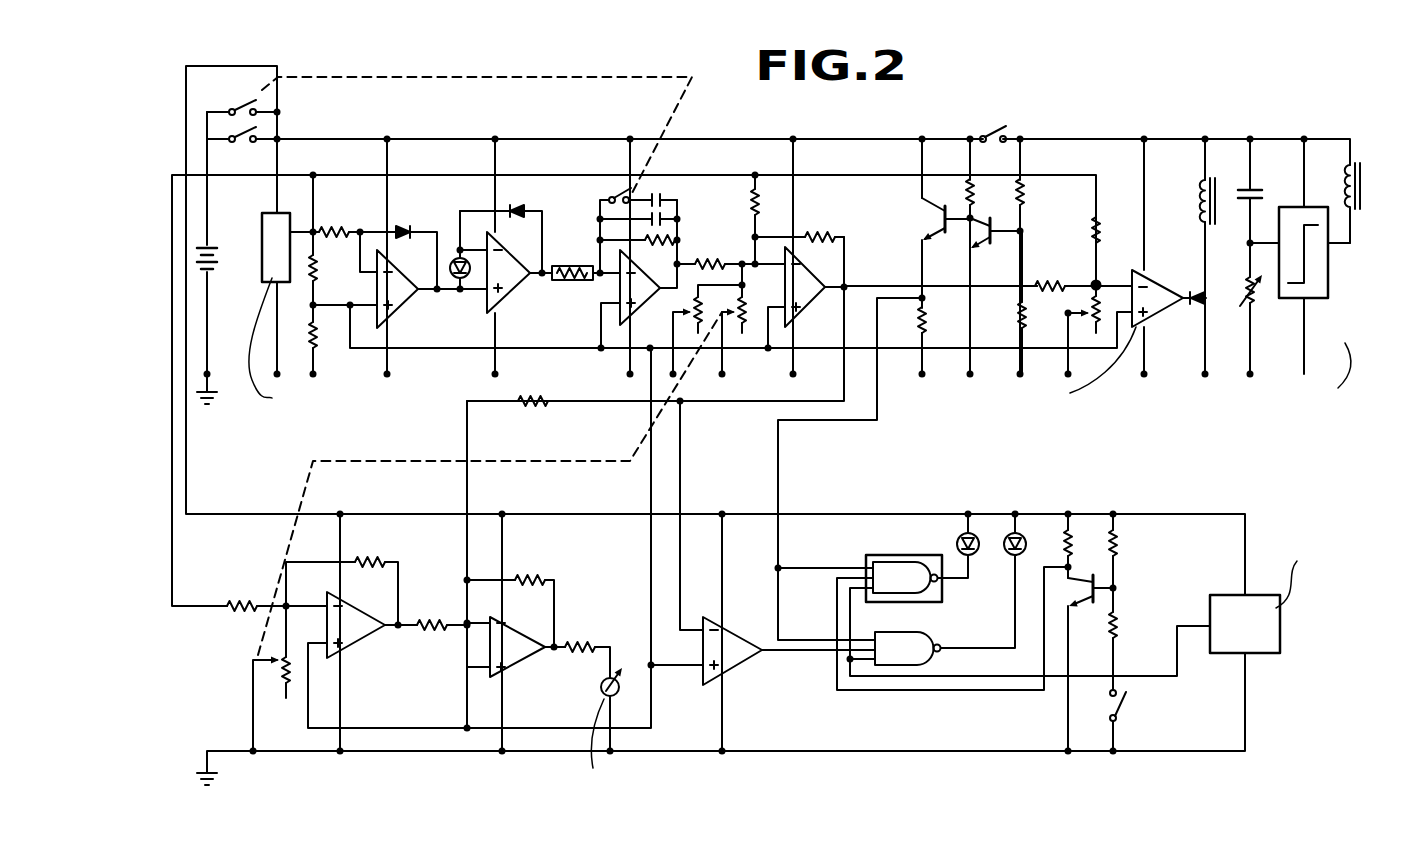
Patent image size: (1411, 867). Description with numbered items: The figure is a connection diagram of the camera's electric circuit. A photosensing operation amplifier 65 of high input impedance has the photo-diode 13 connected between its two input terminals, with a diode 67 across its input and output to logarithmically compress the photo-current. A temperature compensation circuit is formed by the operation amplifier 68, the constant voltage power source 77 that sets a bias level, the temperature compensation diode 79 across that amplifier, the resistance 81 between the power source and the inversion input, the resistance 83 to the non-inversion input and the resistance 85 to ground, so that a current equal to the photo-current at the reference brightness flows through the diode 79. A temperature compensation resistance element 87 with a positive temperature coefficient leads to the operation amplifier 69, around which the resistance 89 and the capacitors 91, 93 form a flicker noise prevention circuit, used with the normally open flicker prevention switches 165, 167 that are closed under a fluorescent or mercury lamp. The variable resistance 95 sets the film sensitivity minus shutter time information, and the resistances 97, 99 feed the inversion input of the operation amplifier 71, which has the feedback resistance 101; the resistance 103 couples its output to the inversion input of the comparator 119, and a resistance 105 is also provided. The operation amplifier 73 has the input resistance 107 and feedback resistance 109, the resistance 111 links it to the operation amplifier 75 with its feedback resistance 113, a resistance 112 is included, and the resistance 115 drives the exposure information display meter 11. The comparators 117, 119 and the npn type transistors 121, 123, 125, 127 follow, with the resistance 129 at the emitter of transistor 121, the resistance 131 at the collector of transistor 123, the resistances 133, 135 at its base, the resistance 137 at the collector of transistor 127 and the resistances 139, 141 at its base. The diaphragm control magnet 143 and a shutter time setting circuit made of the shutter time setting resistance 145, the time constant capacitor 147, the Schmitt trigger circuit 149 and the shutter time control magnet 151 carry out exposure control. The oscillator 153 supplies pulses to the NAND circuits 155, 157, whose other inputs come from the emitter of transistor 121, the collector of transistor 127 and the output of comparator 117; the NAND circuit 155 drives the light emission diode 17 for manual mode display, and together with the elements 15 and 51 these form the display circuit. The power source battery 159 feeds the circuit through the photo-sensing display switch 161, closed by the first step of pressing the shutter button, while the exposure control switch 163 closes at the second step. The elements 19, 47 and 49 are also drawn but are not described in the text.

The exposure information display meter 11 is at (679, 743).
The photo-diode 13 is at (458, 257).
The display circuit element 15 is at (1026, 536).
The light emission diode 17 is at (958, 535).
The variable resistor 19 is at (1094, 332).
The variable resistor 47 is at (271, 678).
The variable resistor 49 is at (745, 313).
The display circuit element 51 is at (1109, 720).
The photosensing operation amplifier 65 is at (502, 294).
The diode 67 is at (501, 227).
The operation amplifier 68 is at (397, 304).
The operation amplifier 69 is at (621, 293).
The operation amplifier 71 is at (806, 297).
The operation amplifier 73 is at (387, 660).
The operation amplifier 75 is at (516, 647).
The constant voltage power source 77 is at (341, 288).
The temperature compensation diode 79 is at (398, 244).
The resistance 81 is at (336, 218).
The resistance 83 is at (323, 268).
The resistance 85 is at (323, 336).
The temperature compensation resistance element 87 is at (586, 260).
The resistance 89 is at (638, 254).
The capacitor 91 is at (666, 218).
The capacitor 93 is at (664, 195).
The variable resistance 95 is at (707, 329).
The resistance 97 is at (707, 263).
The resistance 99 is at (766, 219).
The resistance 101 is at (799, 223).
The resistance 103 is at (1050, 272).
The resistance 105 is at (1111, 256).
The resistance 107 is at (277, 593).
The resistance 109 is at (342, 578).
The resistance 111 is at (432, 611).
The resistance 112 is at (573, 417).
The resistance 113 is at (510, 598).
The resistance 115 is at (582, 646).
The comparator 117 is at (789, 651).
The comparator 119 is at (1163, 304).
The npn type transistor 121 is at (941, 217).
The npn type transistor 123 is at (985, 235).
The npn type transistor 125 is at (1213, 298).
The npn type transistor 127 is at (1090, 591).
The resistance 129 is at (906, 336).
The resistance 131 is at (985, 192).
The resistance 133 is at (1035, 192).
The resistance 135 is at (1005, 302).
The resistance 137 is at (1082, 546).
The resistance 139 is at (1128, 563).
The resistance 141 is at (1128, 649).
The diaphragm control magnet 143 is at (1191, 201).
The shutter time setting resistance 145 is at (1262, 309).
The time constant capacitor 147 is at (1259, 204).
The Schmitt trigger circuit 149 is at (1316, 289).
The shutter time control magnet 151 is at (1351, 163).
The oscillator 153 is at (1290, 595).
The NAND circuit 155 is at (1023, 622).
The NAND circuit 157 is at (932, 610).
The power source battery 159 is at (224, 257).
The photo-sensing display switch 161 is at (242, 150).
The exposure control switch 163 is at (990, 120).
The flicker prevention switch 165 is at (242, 97).
The flicker prevention switch 167 is at (614, 196).